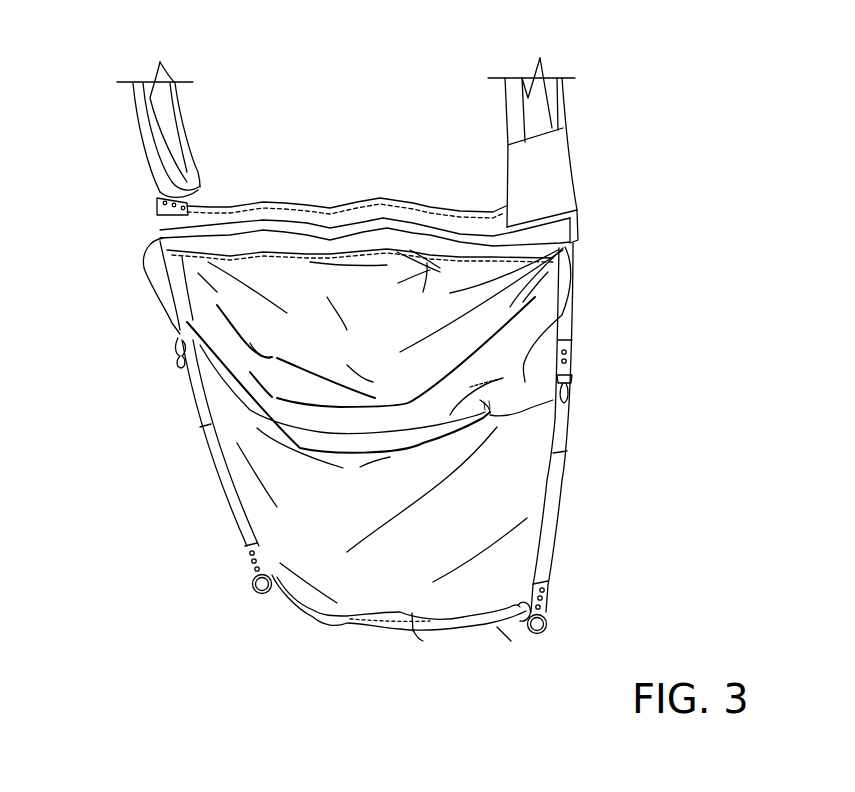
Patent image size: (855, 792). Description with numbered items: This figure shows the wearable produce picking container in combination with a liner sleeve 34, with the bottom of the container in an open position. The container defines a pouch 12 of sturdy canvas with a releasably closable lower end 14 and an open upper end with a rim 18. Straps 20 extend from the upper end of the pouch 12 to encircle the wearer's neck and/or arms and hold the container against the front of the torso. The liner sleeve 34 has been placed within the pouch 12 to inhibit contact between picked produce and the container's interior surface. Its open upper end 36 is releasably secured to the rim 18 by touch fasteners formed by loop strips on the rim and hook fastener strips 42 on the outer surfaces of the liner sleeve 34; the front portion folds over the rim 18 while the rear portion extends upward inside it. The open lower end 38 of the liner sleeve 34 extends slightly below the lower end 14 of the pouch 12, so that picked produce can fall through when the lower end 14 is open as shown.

The pouch 12 is at (586, 416).
The lower end 14 is at (413, 622).
The rim 18 is at (272, 200).
The straps 20 is at (565, 93).
The liner sleeve 34 is at (567, 292).
The open upper end 36 is at (122, 276).
The open lower end 38 is at (500, 627).
The hook fastener strips 42 is at (557, 232).